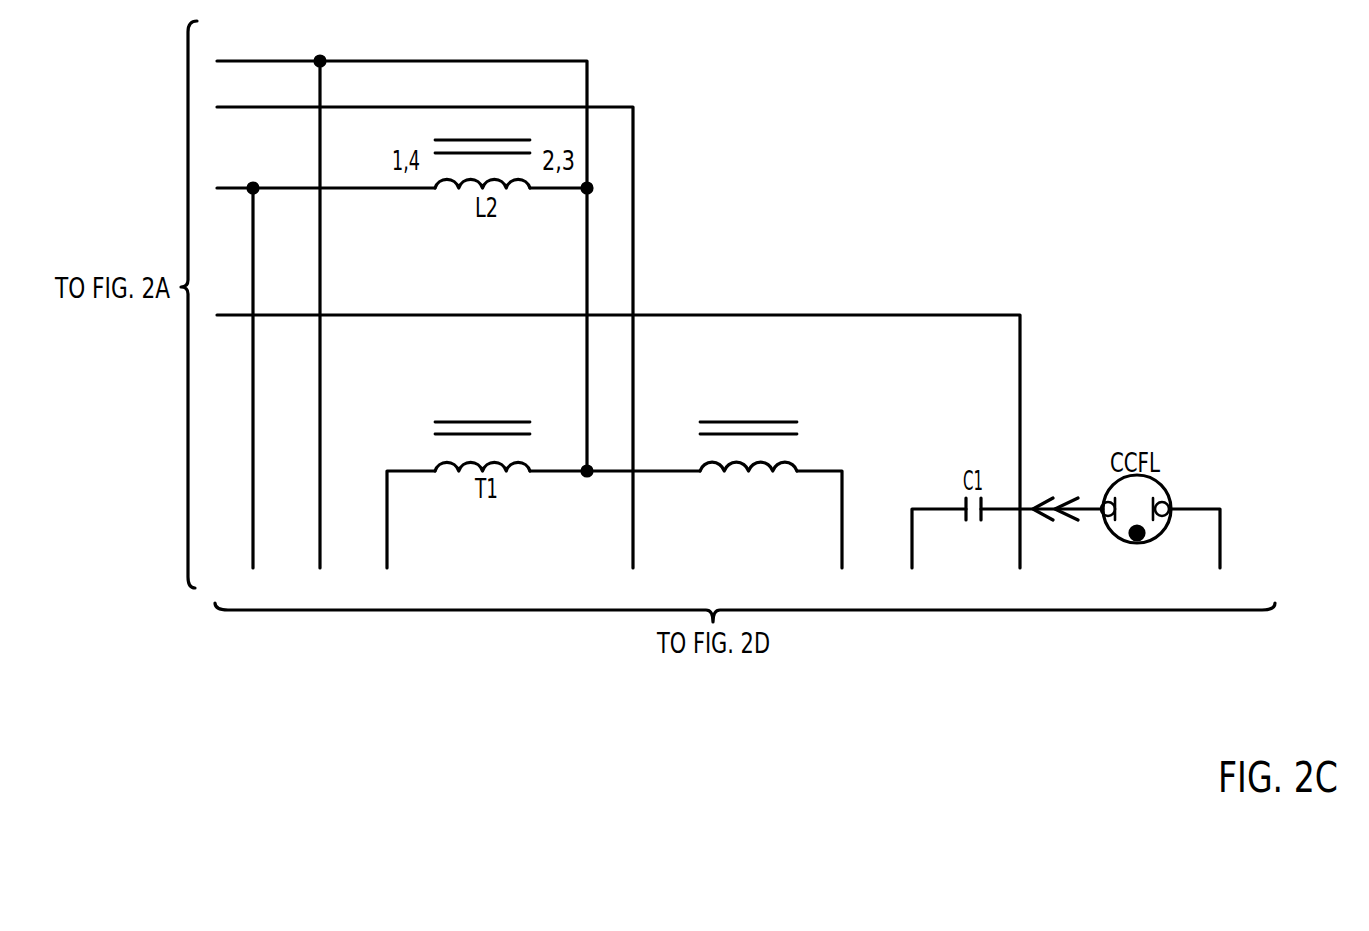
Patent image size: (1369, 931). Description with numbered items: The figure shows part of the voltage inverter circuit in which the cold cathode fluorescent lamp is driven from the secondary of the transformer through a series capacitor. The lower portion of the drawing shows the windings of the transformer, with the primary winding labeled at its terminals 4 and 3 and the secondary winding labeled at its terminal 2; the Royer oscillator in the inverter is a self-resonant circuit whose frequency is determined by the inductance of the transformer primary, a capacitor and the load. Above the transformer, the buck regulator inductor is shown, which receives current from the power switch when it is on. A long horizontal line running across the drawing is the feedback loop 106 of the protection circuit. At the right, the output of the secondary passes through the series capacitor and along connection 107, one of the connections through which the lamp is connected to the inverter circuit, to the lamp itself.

The feedback loop 106 is at (753, 315).
The connection 107 is at (1040, 500).
The transformer T1 secondary winding terminal 2 is at (714, 495).
The transformer T1 primary winding terminal 3 is at (558, 449).
The transformer T1 primary winding terminal 4 is at (458, 495).